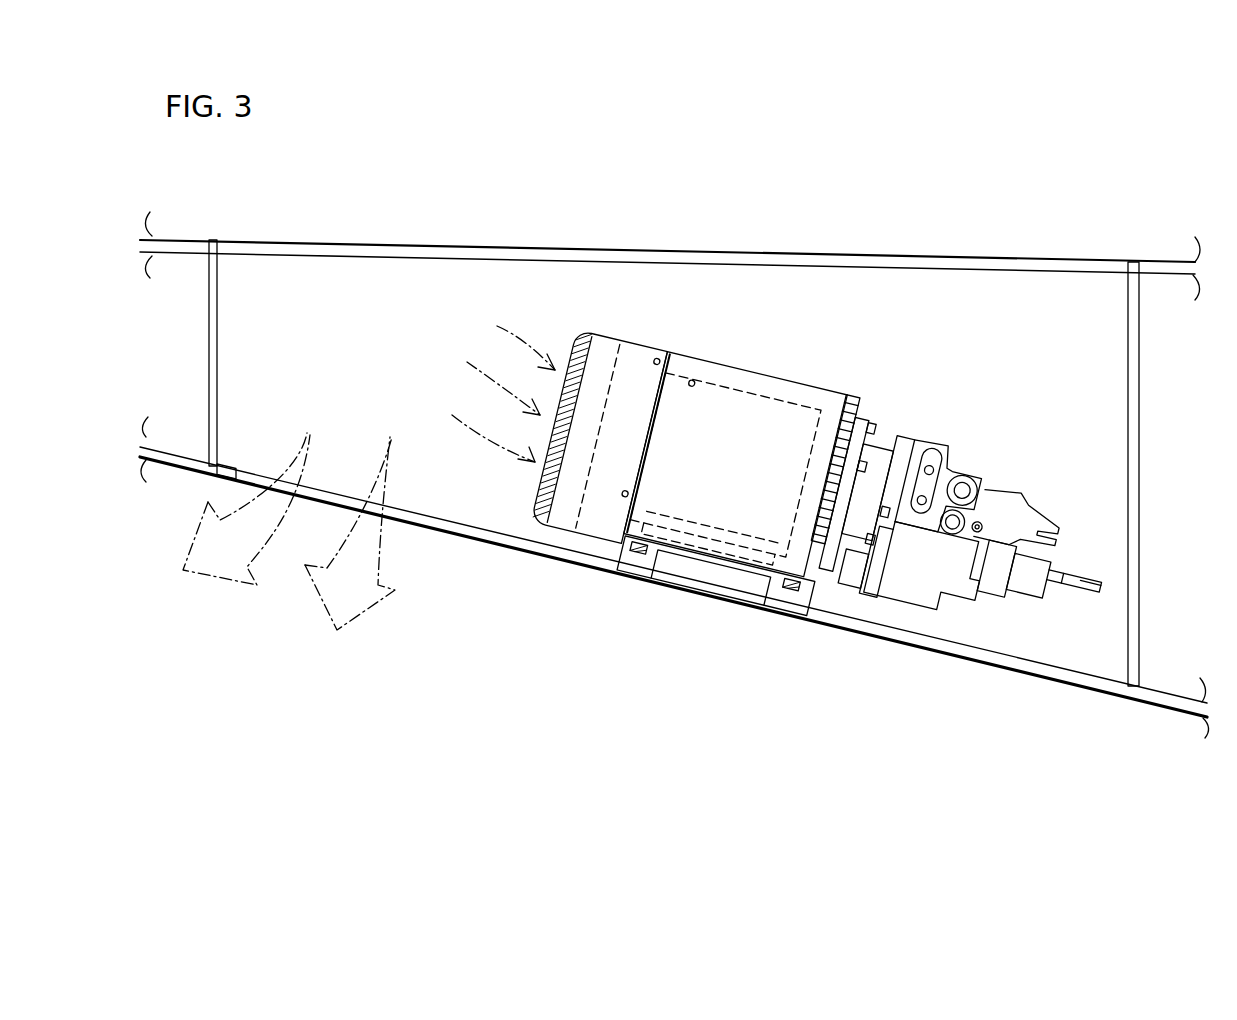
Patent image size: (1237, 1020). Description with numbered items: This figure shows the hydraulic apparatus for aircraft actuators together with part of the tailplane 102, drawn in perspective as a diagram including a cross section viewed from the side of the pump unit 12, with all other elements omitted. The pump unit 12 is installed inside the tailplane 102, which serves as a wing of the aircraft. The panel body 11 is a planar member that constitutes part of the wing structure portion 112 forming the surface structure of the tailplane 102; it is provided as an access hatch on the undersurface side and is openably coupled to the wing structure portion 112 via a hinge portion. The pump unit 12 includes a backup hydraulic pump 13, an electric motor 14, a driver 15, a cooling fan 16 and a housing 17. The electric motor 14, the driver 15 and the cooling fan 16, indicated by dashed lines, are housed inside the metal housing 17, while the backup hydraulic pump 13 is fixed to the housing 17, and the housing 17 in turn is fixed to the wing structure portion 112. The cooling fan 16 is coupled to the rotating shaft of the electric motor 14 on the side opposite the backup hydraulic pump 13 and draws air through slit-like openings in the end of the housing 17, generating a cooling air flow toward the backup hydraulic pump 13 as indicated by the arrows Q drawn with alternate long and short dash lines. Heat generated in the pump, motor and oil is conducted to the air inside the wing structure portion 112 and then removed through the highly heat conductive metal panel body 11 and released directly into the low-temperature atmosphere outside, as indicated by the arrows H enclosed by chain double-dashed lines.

The tailplane 102 is at (1008, 243).
The wing structure portion 112 is at (923, 255).
The panel body 11 is at (283, 483).
The pump unit 12 is at (992, 423).
The backup hydraulic pump 13 is at (908, 575).
The electric motor 14 is at (727, 388).
The driver 15 is at (630, 580).
The cooling fan 16 is at (618, 333).
The housing 17 is at (780, 375).
The arrows H is at (306, 440).
The arrows Q is at (489, 383).